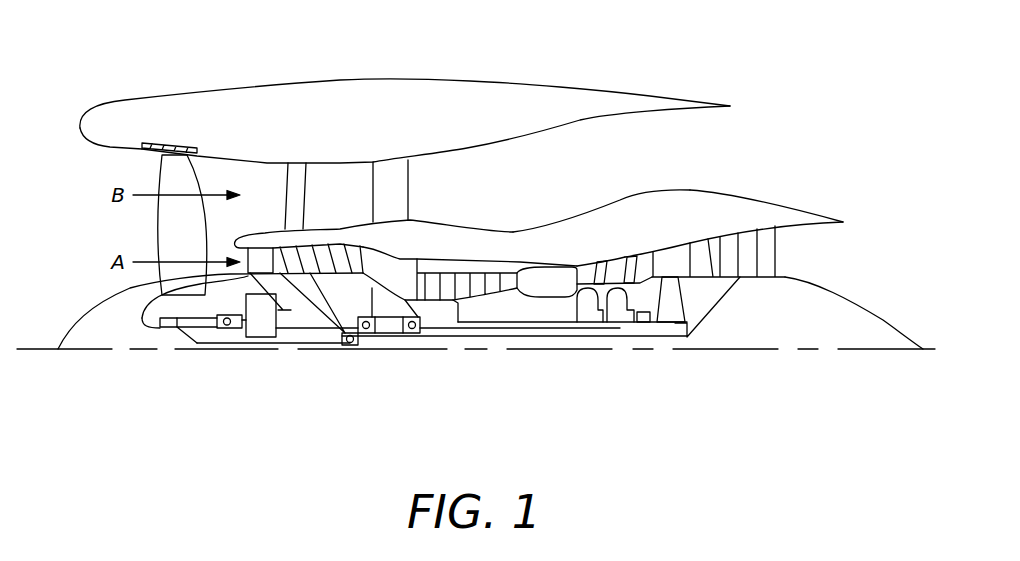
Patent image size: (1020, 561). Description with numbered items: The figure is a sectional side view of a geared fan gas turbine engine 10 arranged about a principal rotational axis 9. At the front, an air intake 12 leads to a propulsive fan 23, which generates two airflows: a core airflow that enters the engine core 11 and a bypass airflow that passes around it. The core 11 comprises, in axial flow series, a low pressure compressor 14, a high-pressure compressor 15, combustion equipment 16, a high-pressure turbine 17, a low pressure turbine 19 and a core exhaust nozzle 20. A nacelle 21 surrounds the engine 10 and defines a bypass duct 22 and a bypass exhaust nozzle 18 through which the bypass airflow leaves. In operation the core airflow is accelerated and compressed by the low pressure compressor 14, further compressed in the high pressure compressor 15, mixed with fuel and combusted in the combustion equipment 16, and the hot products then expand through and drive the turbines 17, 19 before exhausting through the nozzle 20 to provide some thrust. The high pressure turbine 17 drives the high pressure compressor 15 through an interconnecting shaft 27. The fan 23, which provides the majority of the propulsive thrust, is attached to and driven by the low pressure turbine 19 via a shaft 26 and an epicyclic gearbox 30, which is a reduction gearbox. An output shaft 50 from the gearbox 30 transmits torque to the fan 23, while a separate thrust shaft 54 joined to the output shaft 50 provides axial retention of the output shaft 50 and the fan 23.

The principal rotational axis 9 is at (636, 350).
The gas turbine engine 10 is at (160, 96).
The core 11 is at (519, 242).
The air intake 12 is at (110, 173).
The low pressure compressor 14 is at (330, 255).
The high-pressure compressor 15 is at (478, 285).
The combustion equipment 16 is at (550, 285).
The high-pressure turbine 17 is at (610, 268).
The bypass exhaust nozzle 18 is at (735, 145).
The low pressure turbine 19 is at (748, 240).
The core exhaust nozzle 20 is at (820, 250).
The nacelle 21 is at (388, 93).
The bypass duct 22 is at (652, 158).
The propulsive fan 23 is at (163, 228).
The shaft 26 is at (468, 337).
The interconnecting shaft 27 is at (508, 322).
The epicyclic gearbox 30 is at (257, 330).
The output shaft 50 is at (205, 333).
The thrust shaft 54 is at (331, 345).